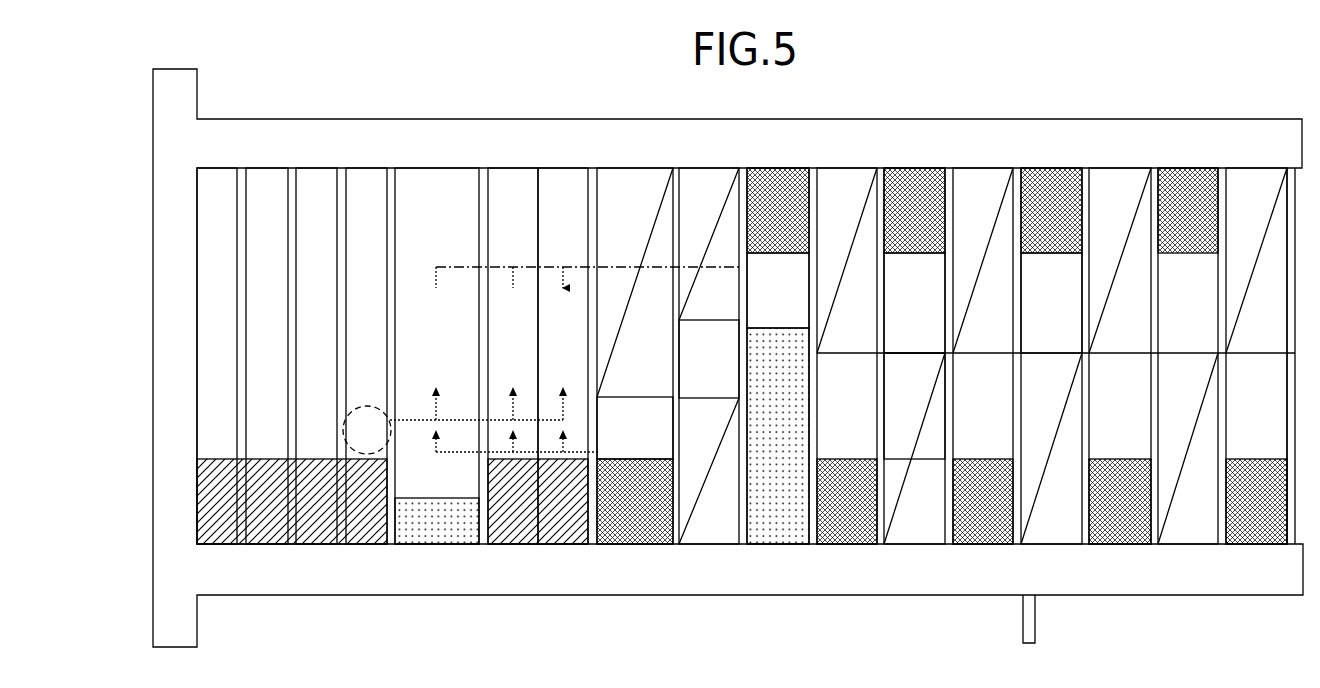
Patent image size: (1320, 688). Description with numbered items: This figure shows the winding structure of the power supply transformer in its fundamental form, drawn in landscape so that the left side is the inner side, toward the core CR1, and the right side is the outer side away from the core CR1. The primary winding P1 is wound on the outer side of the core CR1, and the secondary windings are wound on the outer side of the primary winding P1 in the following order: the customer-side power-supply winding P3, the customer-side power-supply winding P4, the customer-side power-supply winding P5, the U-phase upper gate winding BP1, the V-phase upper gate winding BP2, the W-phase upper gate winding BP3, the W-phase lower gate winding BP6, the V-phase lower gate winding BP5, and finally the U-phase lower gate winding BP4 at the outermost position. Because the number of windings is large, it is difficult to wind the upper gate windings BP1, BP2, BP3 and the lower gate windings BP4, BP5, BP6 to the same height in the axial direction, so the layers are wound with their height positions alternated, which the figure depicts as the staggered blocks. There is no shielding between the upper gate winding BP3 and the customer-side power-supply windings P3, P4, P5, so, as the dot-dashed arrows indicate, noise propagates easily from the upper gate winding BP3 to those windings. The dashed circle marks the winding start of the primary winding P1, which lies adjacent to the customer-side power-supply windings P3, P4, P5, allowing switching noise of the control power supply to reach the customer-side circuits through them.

The core CR1 is at (151, 251).
The primary winding P1 is at (292, 356).
The customer-side power-supply winding P3 is at (437, 356).
The customer-side power-supply winding P4 is at (513, 356).
The customer-side power-supply winding P5 is at (563, 356).
The U-phase upper gate winding BP1 is at (635, 428).
The V-phase upper gate winding BP2 is at (709, 359).
The W-phase upper gate winding BP3 is at (778, 290).
The U-phase lower gate winding BP4 is at (1051, 303).
The V-phase lower gate winding BP5 is at (914, 406).
The W-phase lower gate winding BP6 is at (914, 303).